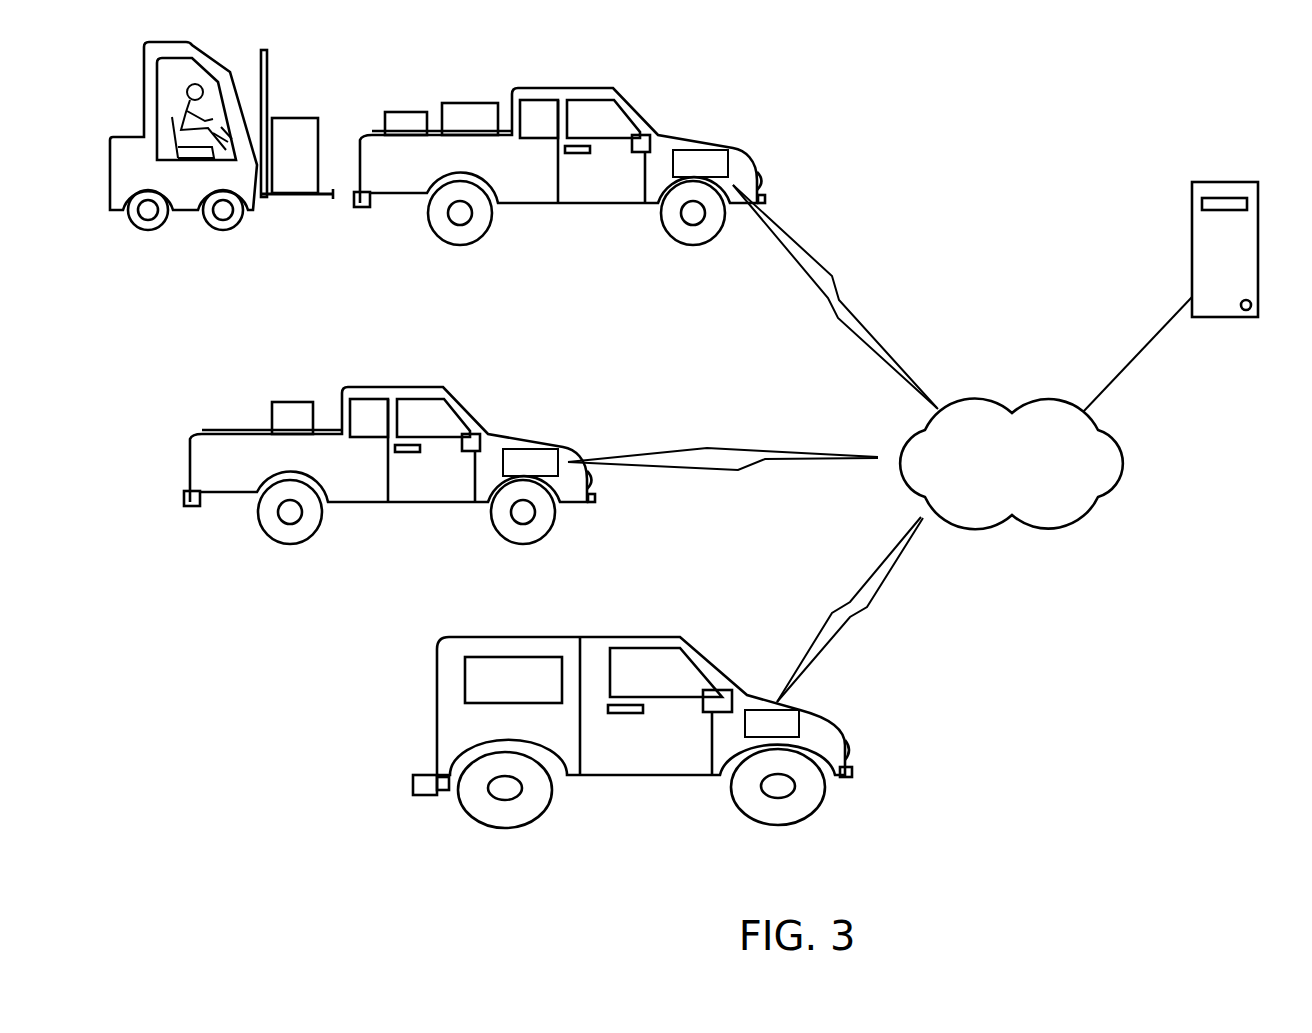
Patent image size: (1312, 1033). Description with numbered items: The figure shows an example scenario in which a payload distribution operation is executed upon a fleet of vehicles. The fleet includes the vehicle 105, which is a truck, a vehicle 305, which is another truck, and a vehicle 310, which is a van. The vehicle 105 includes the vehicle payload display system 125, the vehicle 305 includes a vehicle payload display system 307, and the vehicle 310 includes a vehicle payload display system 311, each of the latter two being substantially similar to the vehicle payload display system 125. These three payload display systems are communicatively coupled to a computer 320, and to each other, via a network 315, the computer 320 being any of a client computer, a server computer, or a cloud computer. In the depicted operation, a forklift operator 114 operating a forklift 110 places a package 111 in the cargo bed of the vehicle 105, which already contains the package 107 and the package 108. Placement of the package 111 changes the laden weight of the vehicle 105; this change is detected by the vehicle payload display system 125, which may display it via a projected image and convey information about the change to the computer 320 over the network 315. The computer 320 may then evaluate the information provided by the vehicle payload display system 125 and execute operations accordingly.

The vehicle 105 is at (559, 136).
The package 107 is at (396, 112).
The package 108 is at (458, 103).
The forklift 110 is at (227, 164).
The package 111 is at (292, 118).
The forklift operator 114 is at (183, 167).
The vehicle payload display system 125 is at (687, 172).
The vehicle 305 is at (389, 445).
The vehicle payload display system 307 is at (517, 471).
The vehicle 310 is at (632, 682).
The vehicle payload display system 311 is at (759, 732).
The network 315 is at (1050, 441).
The computer 320 is at (1255, 338).